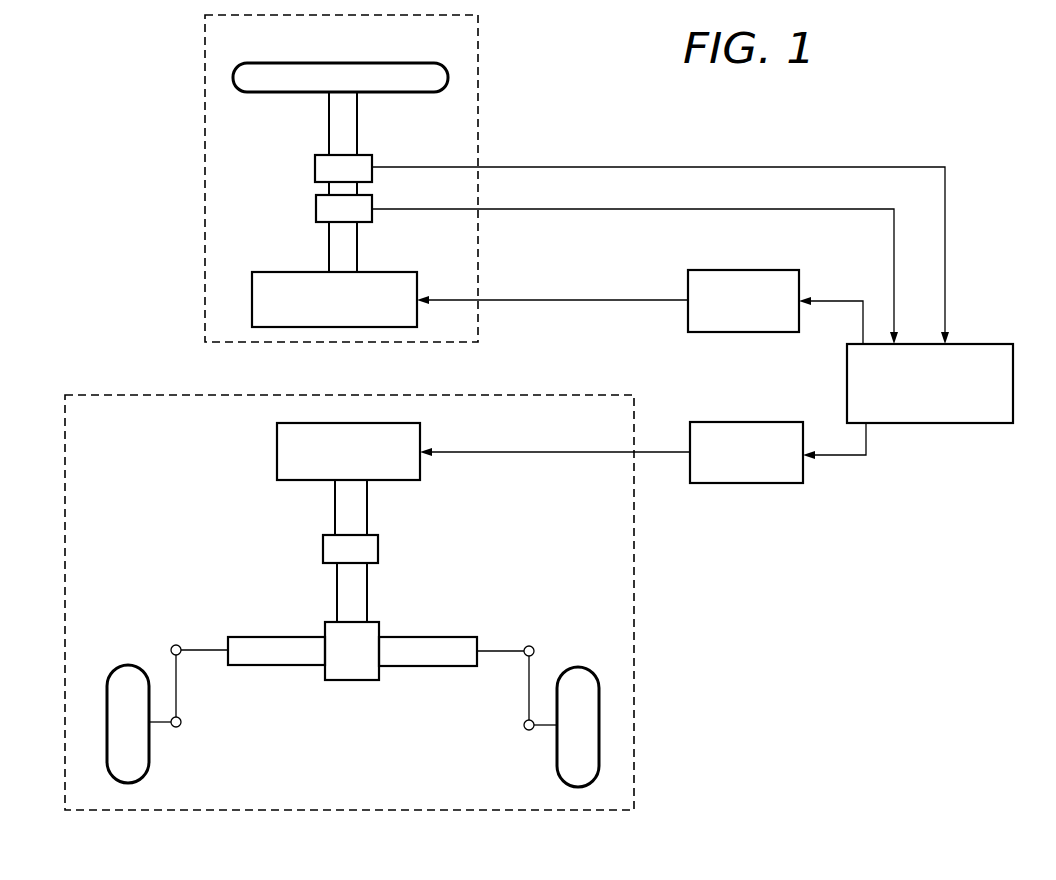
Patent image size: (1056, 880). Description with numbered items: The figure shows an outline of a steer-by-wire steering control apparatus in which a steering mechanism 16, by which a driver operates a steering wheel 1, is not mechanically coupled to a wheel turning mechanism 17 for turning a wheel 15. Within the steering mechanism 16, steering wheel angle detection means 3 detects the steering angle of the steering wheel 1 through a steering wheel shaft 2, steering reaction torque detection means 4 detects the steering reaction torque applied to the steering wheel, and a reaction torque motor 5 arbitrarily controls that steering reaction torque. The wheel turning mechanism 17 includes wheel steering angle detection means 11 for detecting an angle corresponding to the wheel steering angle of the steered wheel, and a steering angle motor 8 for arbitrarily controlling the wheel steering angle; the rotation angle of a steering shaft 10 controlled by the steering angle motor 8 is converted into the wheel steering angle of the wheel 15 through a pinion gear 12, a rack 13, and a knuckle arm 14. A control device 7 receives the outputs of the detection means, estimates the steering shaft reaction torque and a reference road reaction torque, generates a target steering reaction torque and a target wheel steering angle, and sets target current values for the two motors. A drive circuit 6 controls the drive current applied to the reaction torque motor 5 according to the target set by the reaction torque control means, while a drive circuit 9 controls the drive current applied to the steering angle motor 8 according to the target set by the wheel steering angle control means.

The steering wheel 1 is at (398, 63).
The steering wheel shaft 2 is at (333, 127).
The steering wheel angle detection means 3 is at (324, 164).
The steering reaction torque detection means 4 is at (324, 206).
The reaction torque motor 5 is at (268, 272).
The drive circuit 6 is at (727, 270).
The control device 7 is at (975, 344).
The steering angle motor 8 is at (277, 442).
The drive circuit 9 is at (727, 422).
The steering shaft 10 is at (341, 506).
The wheel steering angle detection means 11 is at (331, 546).
The pinion gear 12 is at (343, 681).
The rack 13 is at (255, 666).
The knuckle arm 14 is at (526, 689).
The wheel 15 is at (130, 667).
The steering mechanism 16 is at (478, 66).
The wheel turning mechanism 17 is at (634, 513).